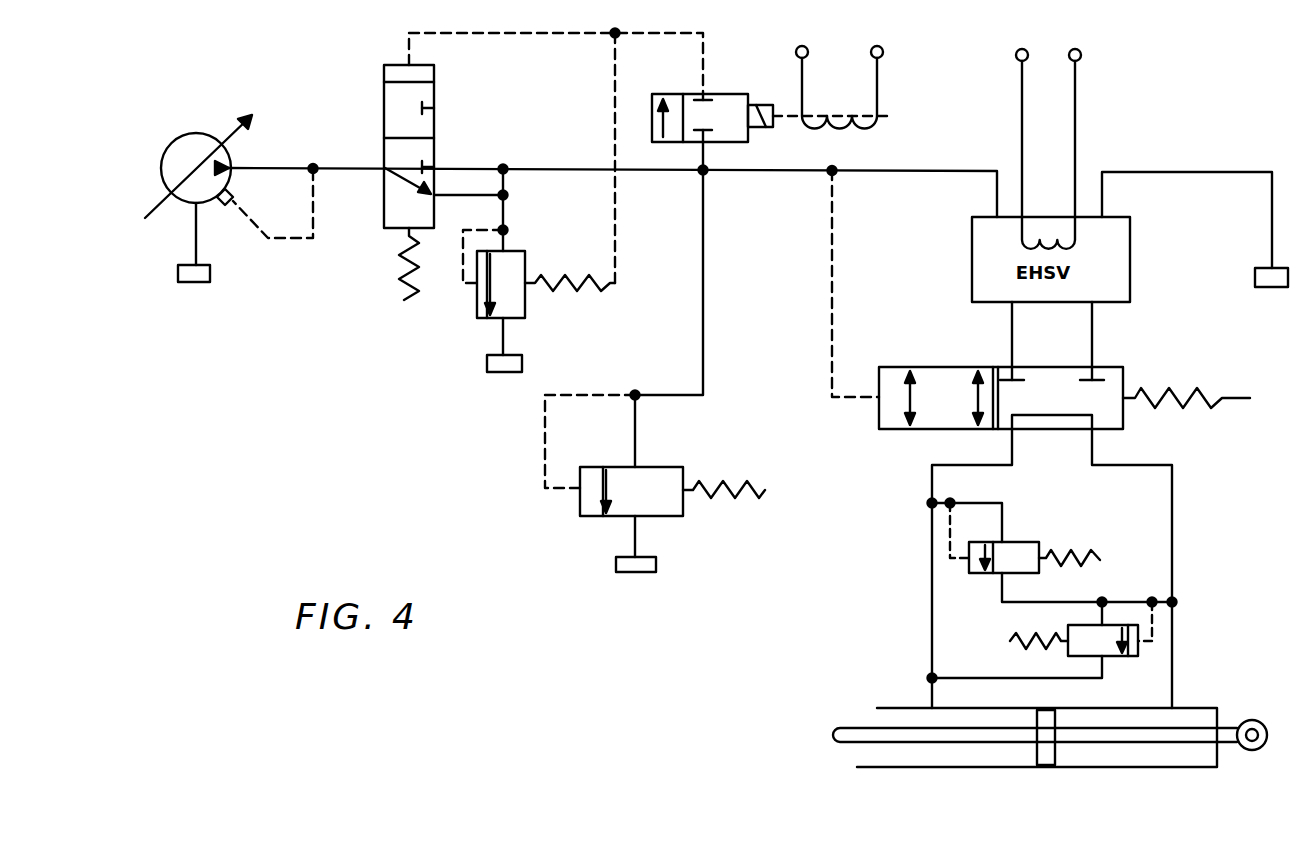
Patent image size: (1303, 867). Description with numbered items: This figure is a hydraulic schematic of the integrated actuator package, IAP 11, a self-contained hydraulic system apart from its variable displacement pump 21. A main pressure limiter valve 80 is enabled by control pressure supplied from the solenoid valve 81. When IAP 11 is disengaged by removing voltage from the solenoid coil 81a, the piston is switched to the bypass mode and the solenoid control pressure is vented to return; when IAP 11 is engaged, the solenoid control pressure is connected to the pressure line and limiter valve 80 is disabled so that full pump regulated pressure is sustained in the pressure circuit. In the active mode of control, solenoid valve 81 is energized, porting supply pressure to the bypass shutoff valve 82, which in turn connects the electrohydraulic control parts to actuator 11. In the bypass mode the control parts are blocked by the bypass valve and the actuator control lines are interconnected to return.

The variable displacement pump 21 is at (177, 159).
The main pressure limiter valve 80 is at (574, 254).
The solenoid valve 81 is at (766, 79).
The solenoid coil 81a is at (853, 102).
The bypass shutoff valve 82 is at (1112, 378).
The integrated actuator package (IAP) 11 is at (896, 720).